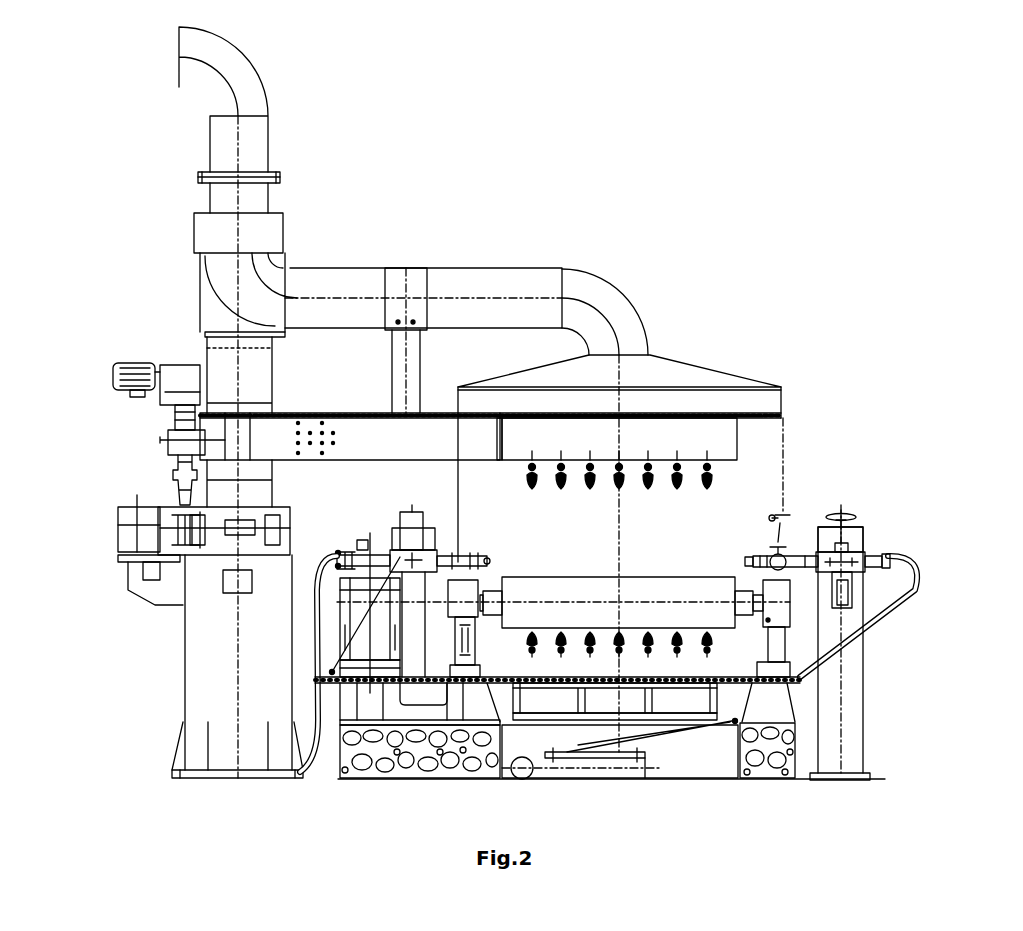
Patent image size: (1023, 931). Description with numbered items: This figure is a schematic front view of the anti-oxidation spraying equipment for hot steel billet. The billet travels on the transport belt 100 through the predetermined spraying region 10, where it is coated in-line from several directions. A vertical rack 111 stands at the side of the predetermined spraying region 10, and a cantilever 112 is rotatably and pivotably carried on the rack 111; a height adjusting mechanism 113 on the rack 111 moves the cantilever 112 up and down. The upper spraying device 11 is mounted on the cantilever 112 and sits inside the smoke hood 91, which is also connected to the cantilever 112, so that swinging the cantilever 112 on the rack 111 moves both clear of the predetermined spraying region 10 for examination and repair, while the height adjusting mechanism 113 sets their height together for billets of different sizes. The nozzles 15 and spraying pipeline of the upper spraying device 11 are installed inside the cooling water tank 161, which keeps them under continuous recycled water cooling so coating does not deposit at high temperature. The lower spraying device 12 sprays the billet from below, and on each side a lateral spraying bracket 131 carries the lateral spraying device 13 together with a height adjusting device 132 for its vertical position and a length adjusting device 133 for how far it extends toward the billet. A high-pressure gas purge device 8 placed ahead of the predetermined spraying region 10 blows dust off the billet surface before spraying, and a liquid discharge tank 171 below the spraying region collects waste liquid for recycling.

The high-pressure gas purge device 8 is at (780, 530).
The predetermined spraying region 10 is at (693, 556).
The upper spraying device 11 is at (557, 462).
The lower spraying device 12 is at (600, 663).
The lateral spraying device 13 is at (843, 512).
The nozzle 15 is at (710, 478).
The smoke hood 91 is at (663, 373).
The transport belt 100 is at (768, 620).
The vertical rack 111 is at (207, 672).
The cantilever 112 is at (348, 440).
The height adjusting mechanism 113 is at (183, 477).
The lateral spraying bracket 131 is at (848, 727).
The height adjusting device 132 is at (852, 573).
The length adjusting device 133 is at (847, 548).
The cooling water tank 161 is at (703, 438).
The liquid discharge tank 171 is at (652, 742).